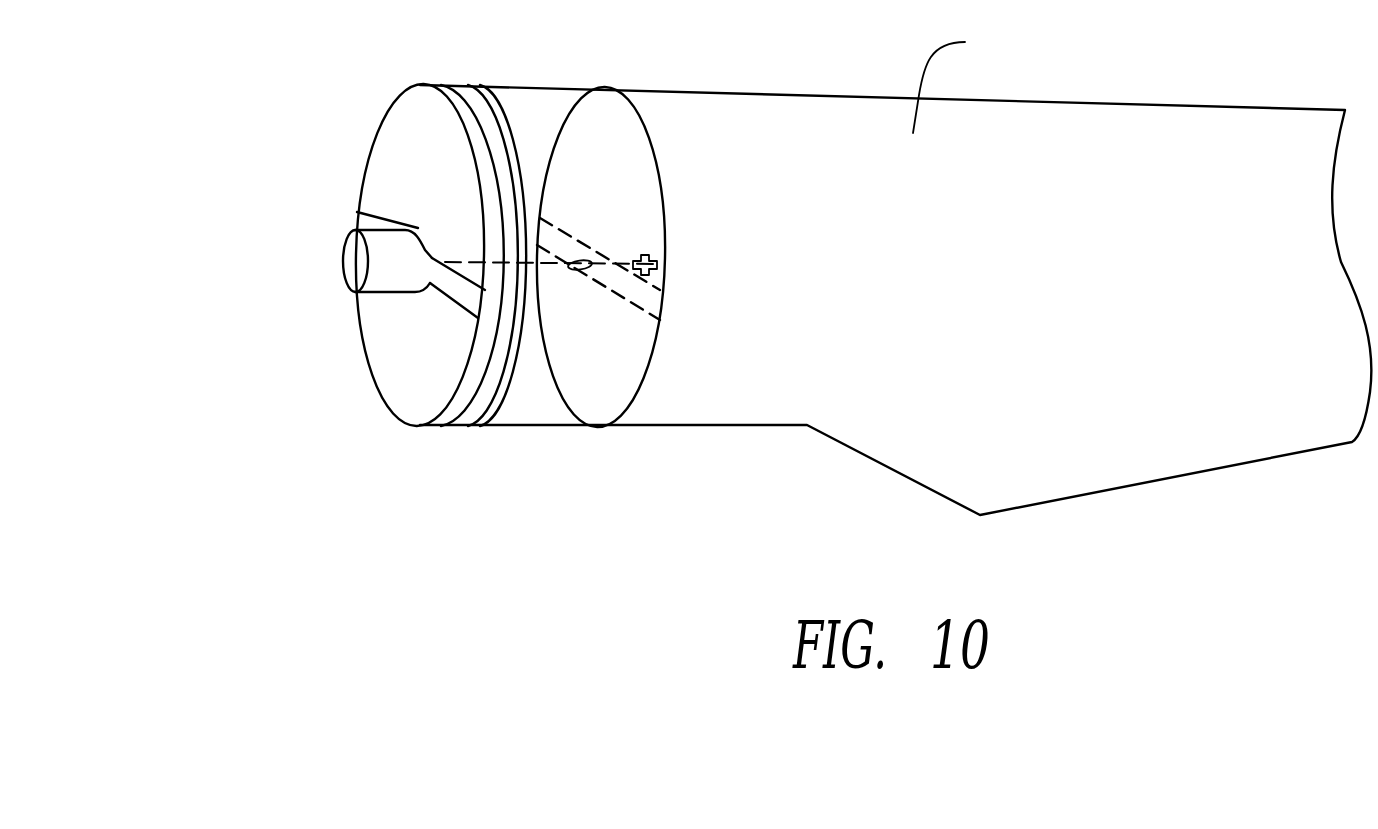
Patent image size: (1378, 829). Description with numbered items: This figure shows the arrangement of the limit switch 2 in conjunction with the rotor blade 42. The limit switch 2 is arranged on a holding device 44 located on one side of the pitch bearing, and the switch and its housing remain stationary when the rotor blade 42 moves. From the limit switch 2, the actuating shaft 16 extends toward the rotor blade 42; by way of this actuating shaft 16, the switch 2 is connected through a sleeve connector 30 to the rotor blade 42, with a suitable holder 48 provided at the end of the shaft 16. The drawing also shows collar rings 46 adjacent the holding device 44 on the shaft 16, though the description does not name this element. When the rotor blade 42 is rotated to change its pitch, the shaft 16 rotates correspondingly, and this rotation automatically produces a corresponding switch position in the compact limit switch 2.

The limit switch 2 is at (360, 260).
The actuating shaft 16 is at (463, 250).
The sleeve connector 30 is at (644, 252).
The rotor blade 42 is at (1163, 120).
The holding device 44 is at (447, 288).
The collar rings 46 is at (493, 117).
The holder 48 is at (617, 290).